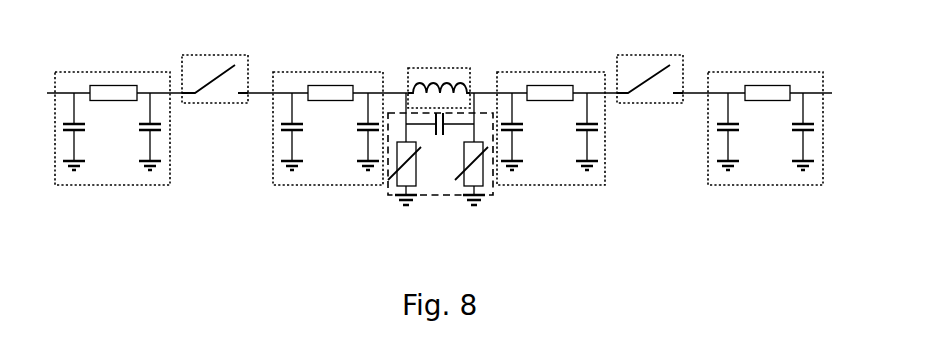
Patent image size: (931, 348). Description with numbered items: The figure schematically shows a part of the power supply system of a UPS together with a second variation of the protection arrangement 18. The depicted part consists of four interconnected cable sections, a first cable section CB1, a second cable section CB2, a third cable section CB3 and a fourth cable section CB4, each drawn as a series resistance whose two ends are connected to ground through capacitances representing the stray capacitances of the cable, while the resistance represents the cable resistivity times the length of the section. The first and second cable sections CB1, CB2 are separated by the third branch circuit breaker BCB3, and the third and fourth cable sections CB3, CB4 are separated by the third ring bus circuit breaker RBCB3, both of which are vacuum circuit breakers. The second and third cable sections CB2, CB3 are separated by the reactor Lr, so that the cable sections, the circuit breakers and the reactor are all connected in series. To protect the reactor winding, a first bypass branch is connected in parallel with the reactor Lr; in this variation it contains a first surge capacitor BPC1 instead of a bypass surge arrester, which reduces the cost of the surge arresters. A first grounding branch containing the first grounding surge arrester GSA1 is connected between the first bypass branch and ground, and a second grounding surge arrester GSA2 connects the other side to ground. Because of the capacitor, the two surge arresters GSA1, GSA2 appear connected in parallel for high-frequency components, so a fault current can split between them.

The protection arrangement 18 is at (397, 106).
The first cable section CB1 is at (112, 108).
The second cable section CB2 is at (328, 108).
The third cable section CB3 is at (551, 108).
The fourth cable section CB4 is at (765, 108).
The third branch circuit breaker BCB3 is at (214, 58).
The third ring bus circuit breaker RBCB3 is at (652, 58).
The reactor Lr is at (439, 75).
The first surge capacitor BPC1 is at (443, 136).
The first grounding surge arrester GSA1 is at (395, 197).
The second grounding surge arrester GSA2 is at (485, 188).